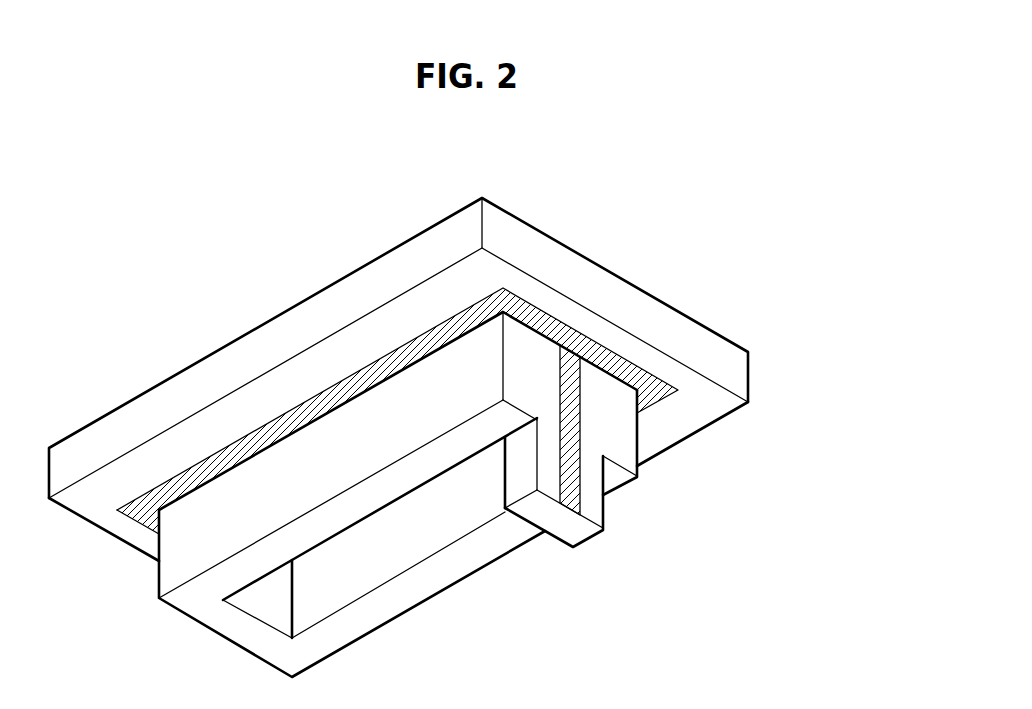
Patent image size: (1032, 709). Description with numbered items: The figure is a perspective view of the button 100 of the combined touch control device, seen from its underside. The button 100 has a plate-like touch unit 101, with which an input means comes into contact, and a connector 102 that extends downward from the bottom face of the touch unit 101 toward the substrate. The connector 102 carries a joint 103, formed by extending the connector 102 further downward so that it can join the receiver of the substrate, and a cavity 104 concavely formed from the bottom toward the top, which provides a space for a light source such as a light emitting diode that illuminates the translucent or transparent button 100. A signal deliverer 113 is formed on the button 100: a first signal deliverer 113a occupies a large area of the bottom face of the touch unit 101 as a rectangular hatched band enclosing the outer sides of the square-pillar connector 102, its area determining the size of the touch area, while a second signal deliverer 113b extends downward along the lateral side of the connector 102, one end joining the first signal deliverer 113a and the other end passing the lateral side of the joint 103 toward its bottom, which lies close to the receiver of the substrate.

The button 100 is at (660, 226).
The touch unit 101 is at (343, 299).
The connector 102 is at (188, 548).
The joint 103 is at (597, 503).
The cavity 104 is at (408, 542).
The signal deliverer 113 is at (847, 357).
The first signal deliverer 113a is at (645, 373).
The second signal deliverer 113b is at (573, 405).